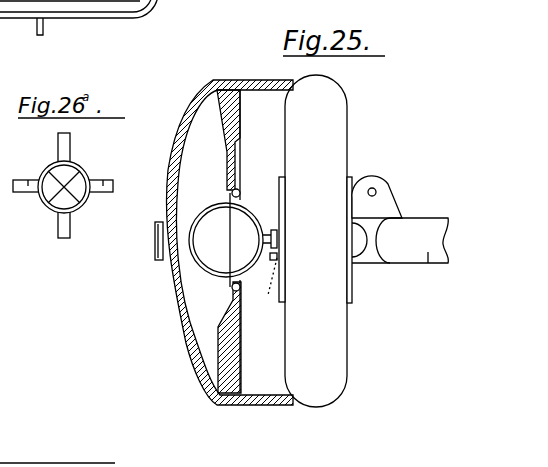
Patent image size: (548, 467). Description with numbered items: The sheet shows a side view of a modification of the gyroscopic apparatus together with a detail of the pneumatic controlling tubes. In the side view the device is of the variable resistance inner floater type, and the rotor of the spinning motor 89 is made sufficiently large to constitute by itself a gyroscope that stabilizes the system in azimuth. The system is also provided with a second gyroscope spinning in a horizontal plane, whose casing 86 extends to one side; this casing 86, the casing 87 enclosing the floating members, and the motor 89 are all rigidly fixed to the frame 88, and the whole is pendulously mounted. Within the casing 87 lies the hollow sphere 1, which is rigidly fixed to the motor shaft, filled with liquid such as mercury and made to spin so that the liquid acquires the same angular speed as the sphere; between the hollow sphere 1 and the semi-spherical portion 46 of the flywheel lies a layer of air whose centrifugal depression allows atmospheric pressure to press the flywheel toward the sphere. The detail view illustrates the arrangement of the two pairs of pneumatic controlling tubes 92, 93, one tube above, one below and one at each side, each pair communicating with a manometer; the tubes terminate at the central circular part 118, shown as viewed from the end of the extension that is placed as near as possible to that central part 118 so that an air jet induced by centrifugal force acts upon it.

In FIG. 25, the hollow sphere 1 is at (247, 223).
In FIG. 25, the semi-spherical portion of the flywheel 46 is at (215, 257).
In FIG. 25, the casing 86 is at (417, 273).
In FIG. 25, the casing 87 is at (256, 80).
In FIG. 25, the frame 88 is at (385, 203).
In FIG. 25, the spinning motor 89 is at (327, 137).
In FIG. 26A, the pneumatic controlling tubes 92 is at (28, 192).
In FIG. 26A, the pneumatic controlling tubes 93 is at (72, 146).
In FIG. 26A, the central circular part 118 is at (84, 176).